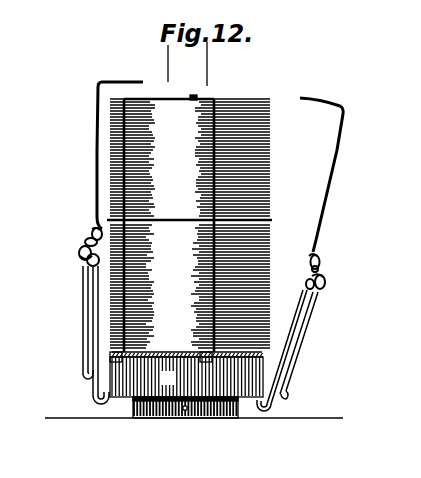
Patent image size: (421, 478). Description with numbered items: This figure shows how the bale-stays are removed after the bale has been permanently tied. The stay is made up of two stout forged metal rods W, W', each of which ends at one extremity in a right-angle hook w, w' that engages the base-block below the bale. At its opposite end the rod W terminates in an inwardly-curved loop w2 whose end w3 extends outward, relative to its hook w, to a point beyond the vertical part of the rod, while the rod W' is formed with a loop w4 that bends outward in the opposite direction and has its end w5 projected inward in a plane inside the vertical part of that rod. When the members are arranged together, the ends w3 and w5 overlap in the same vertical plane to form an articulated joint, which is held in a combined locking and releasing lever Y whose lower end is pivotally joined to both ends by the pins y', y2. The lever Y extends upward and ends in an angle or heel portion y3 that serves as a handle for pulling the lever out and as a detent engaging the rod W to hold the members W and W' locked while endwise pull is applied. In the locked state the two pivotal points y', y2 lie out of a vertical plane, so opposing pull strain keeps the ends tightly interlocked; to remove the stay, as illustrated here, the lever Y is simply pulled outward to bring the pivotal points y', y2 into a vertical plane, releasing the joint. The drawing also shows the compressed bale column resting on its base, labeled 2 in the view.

The lamp base / socket 2 is at (186, 385).
The right-angle hook w is at (220, 107).
The stay member rod W is at (203, 199).
The stay member rod W' is at (182, 335).
The right-angle hook w' is at (176, 416).
The inwardly-curved loop w2 is at (92, 226).
The end of loop w2 w3 is at (86, 238).
The outward-bending loop w4 is at (79, 253).
The end of loop w4 w5 is at (88, 257).
The combined locking and releasing lever Y is at (82, 333).
The pin y' is at (179, 239).
The pin y2 is at (85, 258).
The angle or heel portion y3 is at (84, 379).